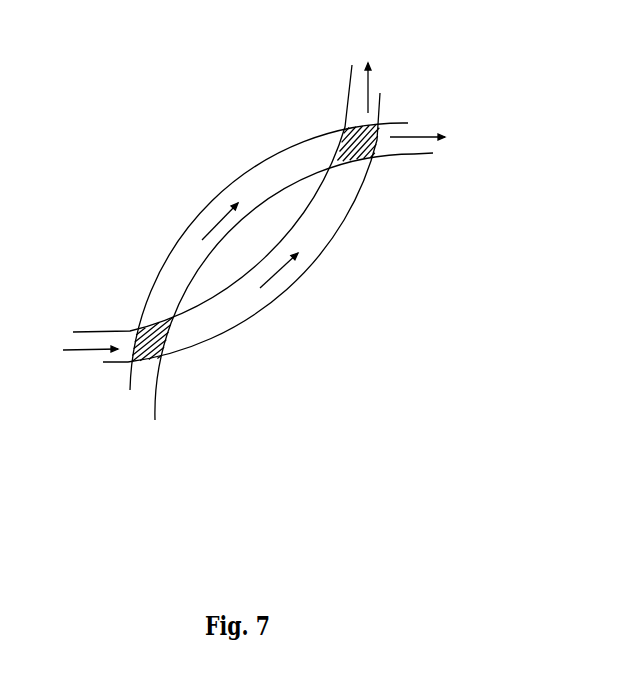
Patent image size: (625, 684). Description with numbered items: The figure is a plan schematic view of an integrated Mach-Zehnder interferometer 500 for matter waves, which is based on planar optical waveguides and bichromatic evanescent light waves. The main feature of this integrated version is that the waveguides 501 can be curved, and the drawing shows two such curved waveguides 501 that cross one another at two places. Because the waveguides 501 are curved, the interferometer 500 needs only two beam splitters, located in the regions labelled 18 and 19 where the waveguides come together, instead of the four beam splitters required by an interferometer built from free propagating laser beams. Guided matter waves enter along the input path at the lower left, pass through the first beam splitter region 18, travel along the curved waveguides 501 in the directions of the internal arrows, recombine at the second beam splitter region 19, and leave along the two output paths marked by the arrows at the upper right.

The Mach-Zehnder interferometer 500 is at (261, 214).
The waveguides 501 is at (299, 152).
The beam splitter region 18 is at (153, 338).
The beam splitter region 19 is at (362, 152).